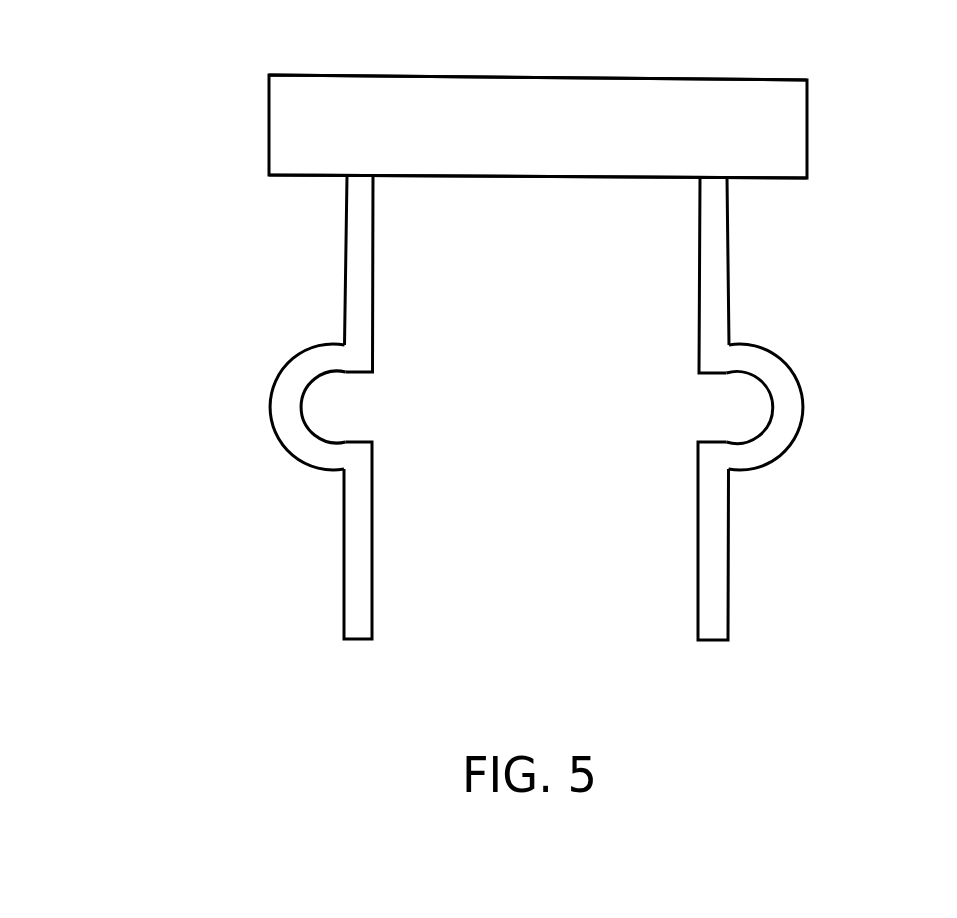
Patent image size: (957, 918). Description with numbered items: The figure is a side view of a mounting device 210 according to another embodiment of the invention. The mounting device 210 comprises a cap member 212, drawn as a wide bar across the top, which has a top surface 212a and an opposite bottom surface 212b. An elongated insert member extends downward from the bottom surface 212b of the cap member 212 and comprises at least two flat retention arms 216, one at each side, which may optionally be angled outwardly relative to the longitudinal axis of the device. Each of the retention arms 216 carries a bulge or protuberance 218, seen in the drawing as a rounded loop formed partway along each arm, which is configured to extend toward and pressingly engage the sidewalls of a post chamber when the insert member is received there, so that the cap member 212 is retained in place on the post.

The mounting device 210 is at (238, 259).
The cap member 212 is at (603, 130).
The top surface 212a is at (563, 58).
The bottom surface 212b is at (558, 199).
The flat retention arms 216 is at (343, 541).
The loop / bent portion of leg 218 is at (785, 402).